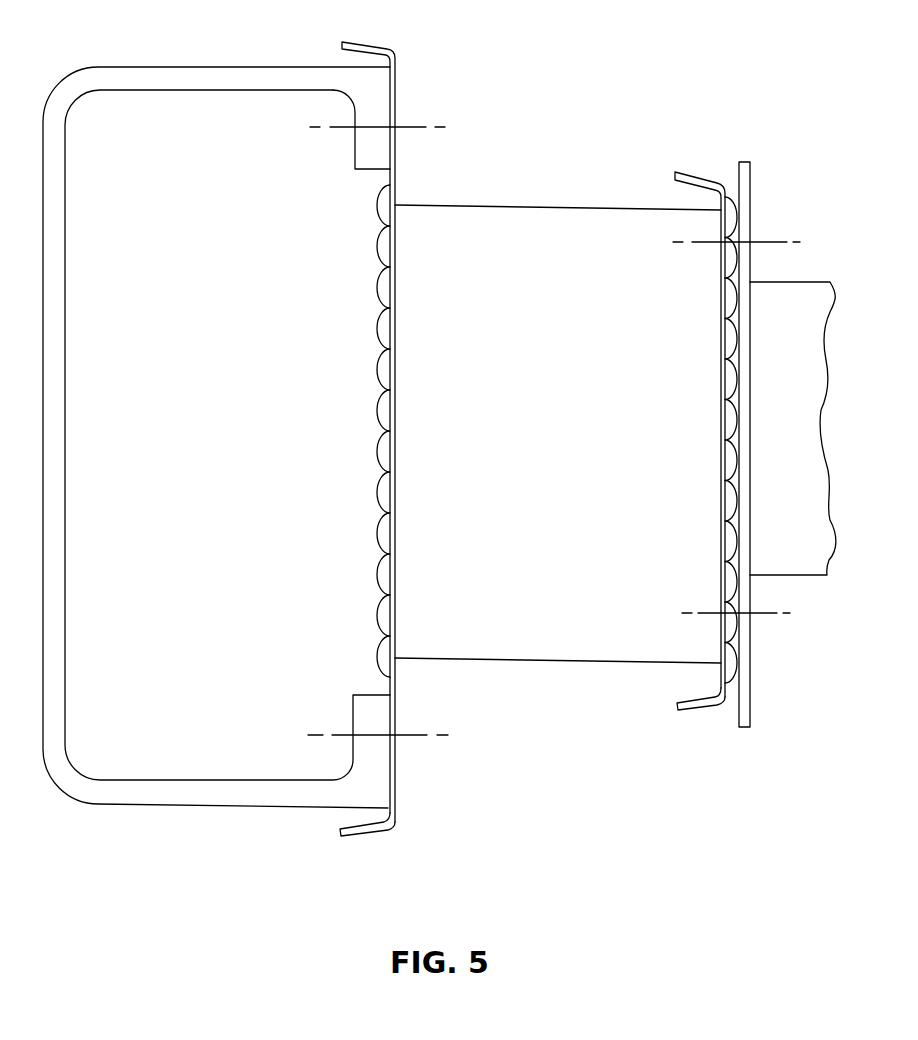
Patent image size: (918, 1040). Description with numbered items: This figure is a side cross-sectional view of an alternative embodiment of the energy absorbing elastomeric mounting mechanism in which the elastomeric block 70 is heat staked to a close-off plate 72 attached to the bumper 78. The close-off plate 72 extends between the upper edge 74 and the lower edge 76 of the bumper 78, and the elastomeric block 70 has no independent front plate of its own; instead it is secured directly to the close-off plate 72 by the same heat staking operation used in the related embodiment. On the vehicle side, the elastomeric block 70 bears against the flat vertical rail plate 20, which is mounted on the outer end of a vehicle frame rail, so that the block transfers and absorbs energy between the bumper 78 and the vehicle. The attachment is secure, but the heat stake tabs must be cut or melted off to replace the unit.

The rail plate 20 is at (748, 173).
The elastomeric block 70 is at (560, 660).
The close-off plate 72 is at (391, 828).
The upper edge 74 is at (358, 147).
The lower edge 76 is at (358, 718).
The bumper 78 is at (55, 385).